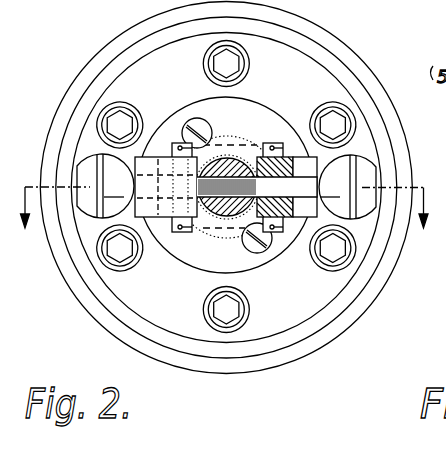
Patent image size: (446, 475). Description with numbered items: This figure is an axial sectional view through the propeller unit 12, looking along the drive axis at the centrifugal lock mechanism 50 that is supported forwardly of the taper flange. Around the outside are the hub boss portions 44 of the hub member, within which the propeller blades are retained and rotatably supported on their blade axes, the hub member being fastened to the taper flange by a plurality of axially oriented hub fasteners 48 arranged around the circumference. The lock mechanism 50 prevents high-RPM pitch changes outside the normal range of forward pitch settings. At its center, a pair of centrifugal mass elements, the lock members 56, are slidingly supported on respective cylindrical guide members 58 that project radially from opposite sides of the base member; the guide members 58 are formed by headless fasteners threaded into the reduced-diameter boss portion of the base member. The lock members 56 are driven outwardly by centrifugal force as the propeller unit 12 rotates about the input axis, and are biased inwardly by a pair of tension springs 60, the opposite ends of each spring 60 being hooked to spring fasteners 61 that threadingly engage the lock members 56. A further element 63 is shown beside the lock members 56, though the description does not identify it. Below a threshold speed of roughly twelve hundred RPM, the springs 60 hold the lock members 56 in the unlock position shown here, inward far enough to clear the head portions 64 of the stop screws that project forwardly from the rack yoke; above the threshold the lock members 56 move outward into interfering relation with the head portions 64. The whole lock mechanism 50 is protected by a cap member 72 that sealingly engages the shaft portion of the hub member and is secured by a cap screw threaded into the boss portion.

The propeller unit 12 is at (226, 192).
The hub boss portions 44 is at (72, 82).
The bolt 48 is at (205, 76).
The centrifugal lock mechanism 50 is at (200, 149).
The lock members 56 is at (173, 145).
The guide members 58 is at (303, 157).
The tension springs 60 is at (214, 242).
The spring fasteners 61 is at (175, 234).
The screw 63 is at (204, 121).
The head portions 64 is at (226, 186).
The cap member 72 is at (316, 65).